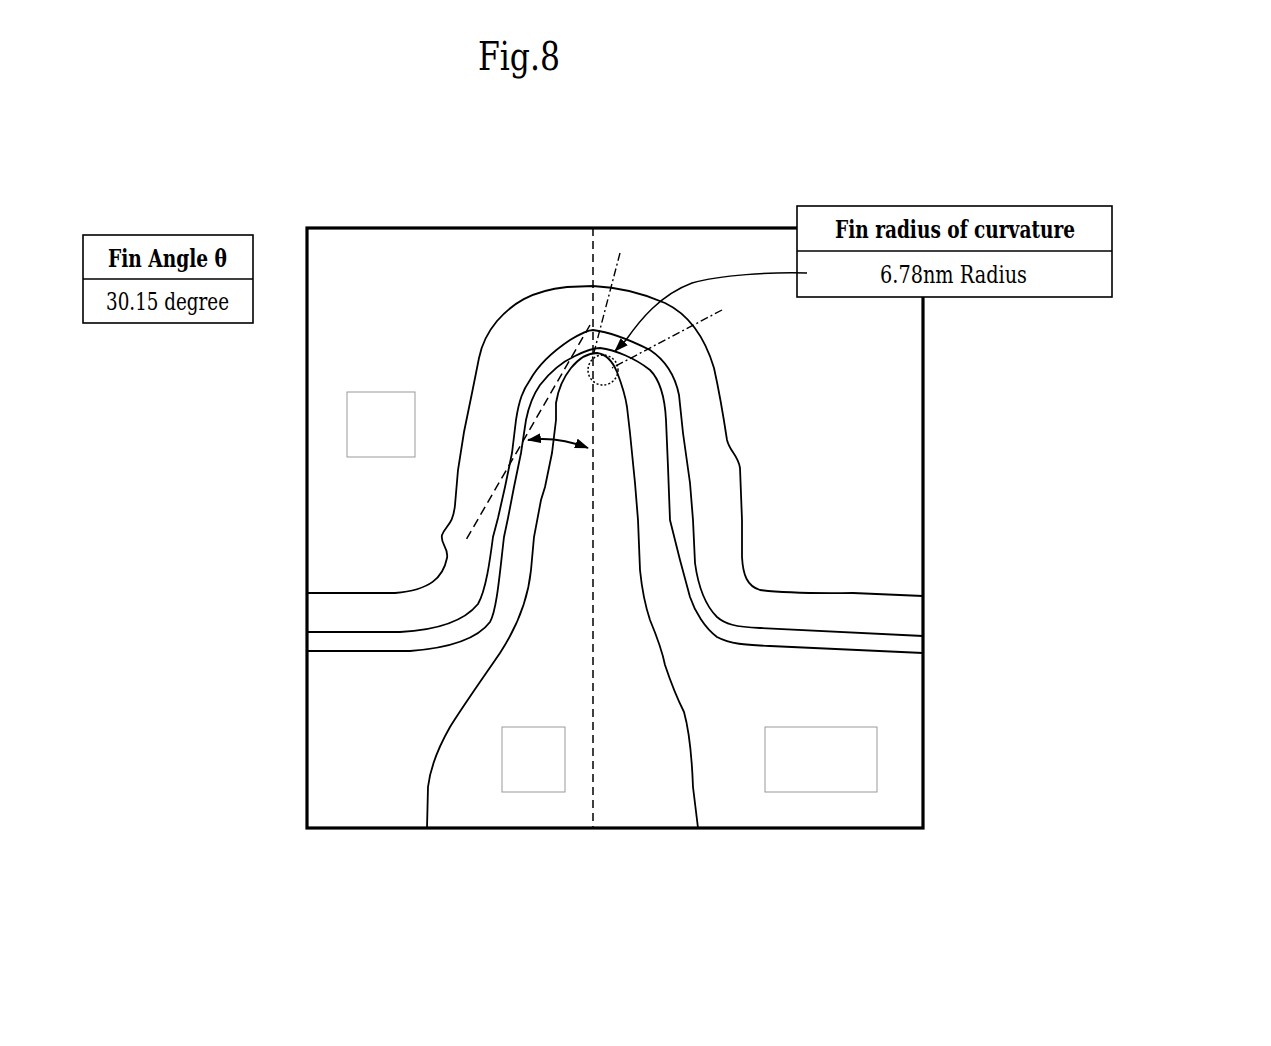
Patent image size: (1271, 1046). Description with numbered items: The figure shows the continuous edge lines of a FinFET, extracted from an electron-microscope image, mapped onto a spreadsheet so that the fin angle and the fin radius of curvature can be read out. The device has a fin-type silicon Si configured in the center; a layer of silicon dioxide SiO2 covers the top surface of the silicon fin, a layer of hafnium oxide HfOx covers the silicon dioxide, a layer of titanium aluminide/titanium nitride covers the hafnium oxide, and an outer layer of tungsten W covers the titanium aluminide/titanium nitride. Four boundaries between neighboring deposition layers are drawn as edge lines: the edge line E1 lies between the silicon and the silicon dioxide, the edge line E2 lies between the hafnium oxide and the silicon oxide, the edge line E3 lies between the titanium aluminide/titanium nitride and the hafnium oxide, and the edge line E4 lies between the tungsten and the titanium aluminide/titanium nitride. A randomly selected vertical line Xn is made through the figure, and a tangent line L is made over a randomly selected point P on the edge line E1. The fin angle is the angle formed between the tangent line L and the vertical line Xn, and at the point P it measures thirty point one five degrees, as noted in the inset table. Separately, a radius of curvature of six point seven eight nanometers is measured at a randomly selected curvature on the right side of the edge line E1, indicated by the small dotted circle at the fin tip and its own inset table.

The edge line E1 is at (426, 758).
The edge line E2 is at (303, 648).
The edge line E3 is at (303, 632).
The edge line E4 is at (303, 593).
The point P is at (566, 366).
The tangent line L is at (521, 444).
The tungsten layer W is at (400, 447).
The fin-type silicon Si is at (550, 782).
The silicon dioxide layer SiO2 is at (862, 782).
The vertical line Xn is at (591, 556).
The hafnium oxide layer HfOx is at (910, 645).